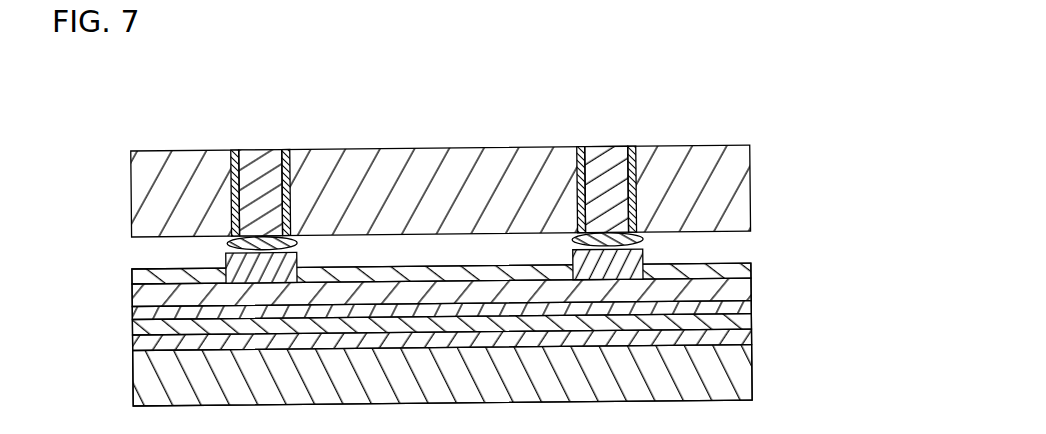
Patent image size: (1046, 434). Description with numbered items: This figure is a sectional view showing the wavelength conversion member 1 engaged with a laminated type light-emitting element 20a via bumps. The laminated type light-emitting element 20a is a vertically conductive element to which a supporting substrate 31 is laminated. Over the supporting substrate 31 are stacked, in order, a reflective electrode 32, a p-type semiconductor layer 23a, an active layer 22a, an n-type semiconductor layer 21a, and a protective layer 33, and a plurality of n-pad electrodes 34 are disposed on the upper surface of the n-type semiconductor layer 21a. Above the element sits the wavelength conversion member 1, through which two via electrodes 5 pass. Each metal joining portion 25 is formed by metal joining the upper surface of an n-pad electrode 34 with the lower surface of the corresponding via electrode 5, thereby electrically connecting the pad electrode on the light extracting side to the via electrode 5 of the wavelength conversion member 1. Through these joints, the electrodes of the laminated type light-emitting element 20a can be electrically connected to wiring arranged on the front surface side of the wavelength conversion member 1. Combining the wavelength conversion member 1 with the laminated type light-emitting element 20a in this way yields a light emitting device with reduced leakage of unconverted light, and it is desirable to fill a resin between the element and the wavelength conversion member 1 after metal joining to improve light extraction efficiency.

The wavelength conversion member 1 is at (474, 104).
The via electrode 5 is at (263, 158).
The laminated type light-emitting element 20a is at (817, 276).
The n-type semiconductor layer 21a is at (746, 292).
The active layer 22a is at (746, 309).
The p-type semiconductor layer 23a is at (746, 324).
The metal joining portion 25 is at (236, 246).
The supporting substrate 31 is at (746, 388).
The reflective electrode 32 is at (746, 338).
The protective layer 33 is at (746, 268).
The n-pad electrode 34 is at (245, 270).